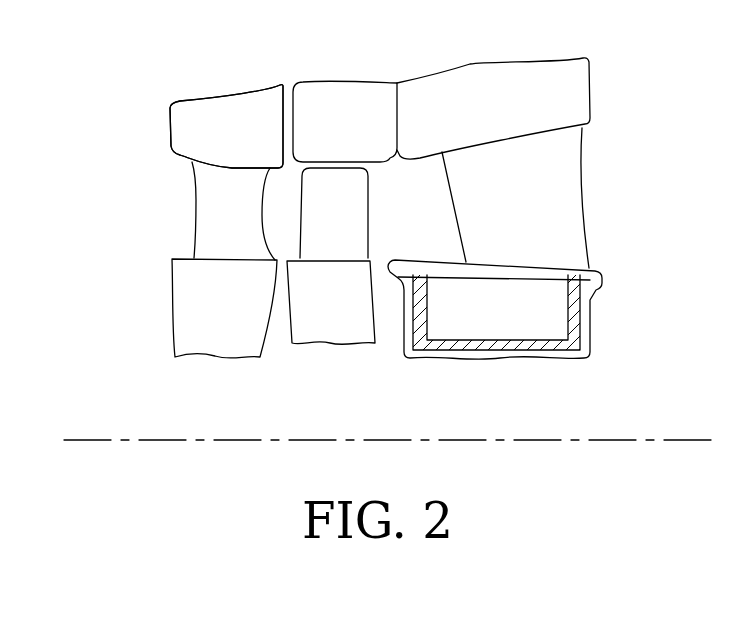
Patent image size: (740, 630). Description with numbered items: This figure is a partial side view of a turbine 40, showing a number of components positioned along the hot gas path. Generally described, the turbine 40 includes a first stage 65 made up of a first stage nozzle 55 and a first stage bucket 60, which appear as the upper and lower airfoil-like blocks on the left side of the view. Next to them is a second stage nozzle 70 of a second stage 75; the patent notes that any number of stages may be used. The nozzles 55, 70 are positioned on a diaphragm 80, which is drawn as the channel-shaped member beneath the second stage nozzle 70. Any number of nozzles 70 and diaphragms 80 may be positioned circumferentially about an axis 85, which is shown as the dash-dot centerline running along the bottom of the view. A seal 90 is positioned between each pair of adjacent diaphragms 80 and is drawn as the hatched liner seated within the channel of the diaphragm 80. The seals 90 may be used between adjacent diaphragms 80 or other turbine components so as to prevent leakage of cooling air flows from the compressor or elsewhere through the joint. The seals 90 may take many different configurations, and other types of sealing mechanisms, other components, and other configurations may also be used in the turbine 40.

The turbine 40 is at (98, 80).
The first stage nozzle 55 is at (224, 260).
The first stage bucket 60 is at (331, 256).
The first stage 65 is at (194, 92).
The second stage nozzle 70 is at (515, 198).
The second stage 75 is at (443, 65).
The diaphragm 80 is at (590, 303).
The axis 85 is at (101, 440).
The seal 90 is at (442, 348).